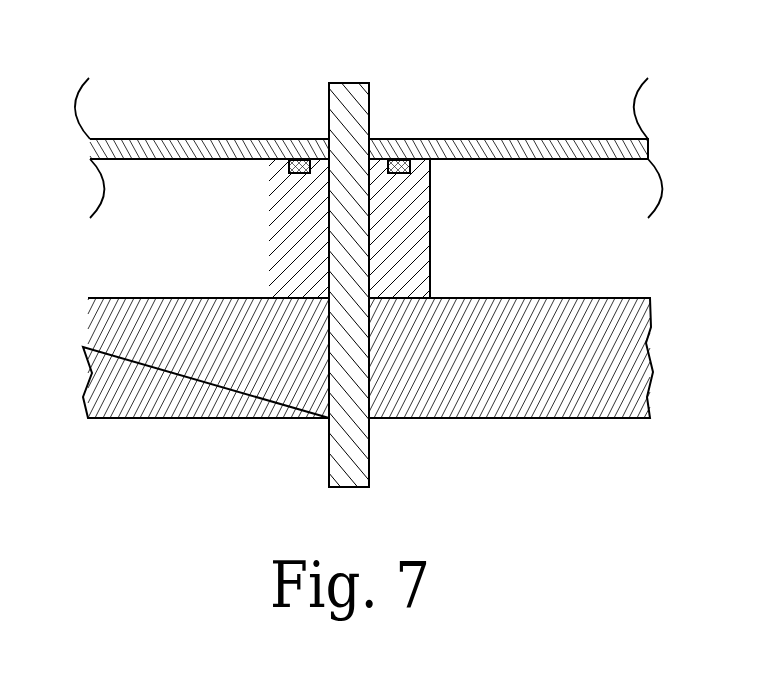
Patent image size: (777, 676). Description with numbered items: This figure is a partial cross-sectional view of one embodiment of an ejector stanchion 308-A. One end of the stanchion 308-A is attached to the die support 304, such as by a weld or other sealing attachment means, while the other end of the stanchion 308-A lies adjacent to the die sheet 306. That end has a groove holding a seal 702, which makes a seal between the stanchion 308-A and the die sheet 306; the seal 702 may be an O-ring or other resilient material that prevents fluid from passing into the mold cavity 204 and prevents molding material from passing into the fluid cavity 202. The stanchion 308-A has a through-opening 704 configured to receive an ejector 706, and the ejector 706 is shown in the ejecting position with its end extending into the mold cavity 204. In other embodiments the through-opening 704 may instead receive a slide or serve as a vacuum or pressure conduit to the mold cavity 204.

The fluid cavity 202 is at (205, 201).
The mold cavity 204 is at (463, 105).
The die support 304 is at (613, 298).
The die sheet 306 is at (560, 138).
The ejector stanchion 308-A is at (269, 222).
The seal 702 is at (302, 153).
The through-opening 704 is at (370, 223).
The ejector 706 is at (328, 443).